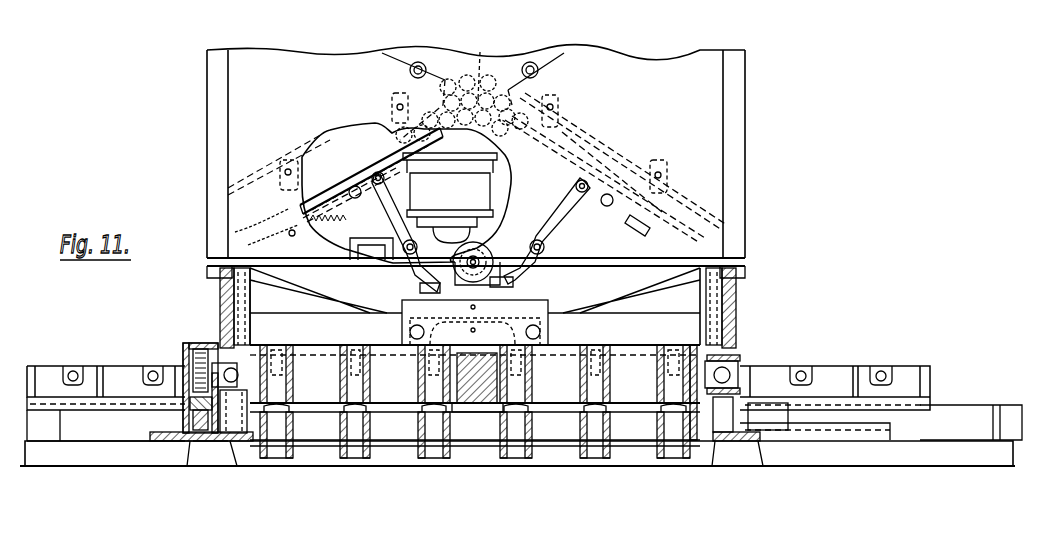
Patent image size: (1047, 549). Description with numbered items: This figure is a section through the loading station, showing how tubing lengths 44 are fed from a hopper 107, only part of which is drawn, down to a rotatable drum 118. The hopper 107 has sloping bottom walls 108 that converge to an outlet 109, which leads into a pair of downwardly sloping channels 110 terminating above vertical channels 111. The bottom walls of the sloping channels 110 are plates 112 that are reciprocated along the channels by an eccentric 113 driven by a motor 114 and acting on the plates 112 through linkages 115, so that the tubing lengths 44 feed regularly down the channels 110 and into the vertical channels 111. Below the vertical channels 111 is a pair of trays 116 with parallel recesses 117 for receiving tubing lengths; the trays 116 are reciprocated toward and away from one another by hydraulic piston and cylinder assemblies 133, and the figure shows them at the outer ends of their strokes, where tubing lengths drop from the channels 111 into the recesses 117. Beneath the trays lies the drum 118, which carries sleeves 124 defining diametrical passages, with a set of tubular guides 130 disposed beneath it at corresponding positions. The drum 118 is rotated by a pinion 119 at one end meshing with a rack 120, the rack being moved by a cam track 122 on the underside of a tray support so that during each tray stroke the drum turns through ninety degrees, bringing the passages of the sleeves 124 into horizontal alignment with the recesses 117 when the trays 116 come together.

The tubing lengths 44 is at (556, 107).
The hopper 107 is at (462, 72).
The sloping bottom walls 108 is at (400, 58).
The outlet 109 is at (480, 58).
The downwardly sloping channels 110 is at (340, 180).
The vertical channels 111 is at (219, 278).
The plates 112 is at (363, 182).
The eccentric 113 is at (483, 260).
The motor 114 is at (461, 201).
The linkages 115 is at (394, 218).
The trays 116 is at (115, 365).
The recesses 117 is at (74, 367).
The drum 118 is at (477, 393).
The pinion 119 is at (200, 342).
The rack 120 is at (203, 446).
The cam track 122 is at (150, 407).
The sleeves 124 is at (294, 386).
The tubular guides 130 is at (294, 421).
The hydraulic piston and cylinder assemblies 133 is at (30, 420).